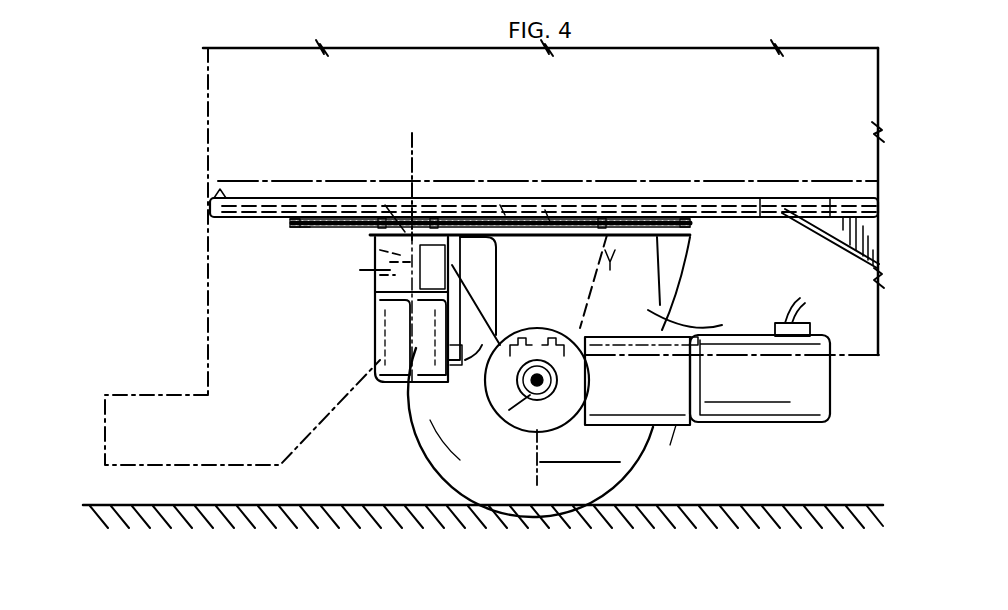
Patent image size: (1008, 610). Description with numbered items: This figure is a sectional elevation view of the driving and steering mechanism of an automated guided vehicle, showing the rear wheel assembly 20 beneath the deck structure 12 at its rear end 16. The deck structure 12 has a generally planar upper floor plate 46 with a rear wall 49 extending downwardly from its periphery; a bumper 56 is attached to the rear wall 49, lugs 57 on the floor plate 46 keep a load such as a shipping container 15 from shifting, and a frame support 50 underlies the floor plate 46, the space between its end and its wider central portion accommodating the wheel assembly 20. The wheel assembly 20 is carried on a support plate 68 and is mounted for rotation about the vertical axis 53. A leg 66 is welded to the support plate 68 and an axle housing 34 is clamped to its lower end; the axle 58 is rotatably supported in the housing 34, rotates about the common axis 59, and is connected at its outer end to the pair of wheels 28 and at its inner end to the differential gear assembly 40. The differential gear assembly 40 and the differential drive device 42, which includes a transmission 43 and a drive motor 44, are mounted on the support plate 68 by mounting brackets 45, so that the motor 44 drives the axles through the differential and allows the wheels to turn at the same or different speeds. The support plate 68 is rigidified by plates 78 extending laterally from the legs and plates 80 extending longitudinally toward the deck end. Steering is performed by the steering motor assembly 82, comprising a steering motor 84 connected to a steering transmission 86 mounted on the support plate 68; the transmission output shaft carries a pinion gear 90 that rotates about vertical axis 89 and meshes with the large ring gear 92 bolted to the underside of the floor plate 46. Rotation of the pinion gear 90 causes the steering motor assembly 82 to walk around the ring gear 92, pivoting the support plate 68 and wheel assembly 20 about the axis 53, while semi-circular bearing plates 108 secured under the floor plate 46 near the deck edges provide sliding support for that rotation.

The vehicle deck structure 12 is at (685, 195).
The shipping container 15 is at (222, 108).
The rear end 16 is at (614, 205).
The rear wheel assembly 20 is at (603, 492).
The pair of wheels 28 is at (478, 465).
The rear axle housing 34 is at (537, 345).
The differential gear assembly 40 is at (483, 402).
The differential drive device 42 is at (778, 434).
The transmission 43 is at (676, 425).
The drive motor 44 is at (748, 422).
The mounting bracket 45 is at (690, 321).
The upper floor plate 46 is at (768, 200).
The rear wall 49 is at (208, 278).
The frame support 50 is at (840, 215).
The vertical axis 53 is at (620, 462).
The bumper 56 is at (140, 405).
The lug 57 is at (212, 196).
The axle 58 is at (509, 410).
The common axis 59 is at (560, 372).
The leg 66 is at (597, 282).
The support plate 68 is at (657, 232).
The rigidifying plate 78 is at (548, 228).
The rigidifying plate 80 is at (432, 198).
The steering motor assembly 82 is at (345, 307).
The steering motor 84 is at (385, 344).
The steering transmission 86 is at (380, 270).
The vertical axis 89 is at (412, 155).
The pinion gear 90 is at (400, 215).
The ring gear 92 is at (462, 228).
The bearing plate 108 is at (298, 225).